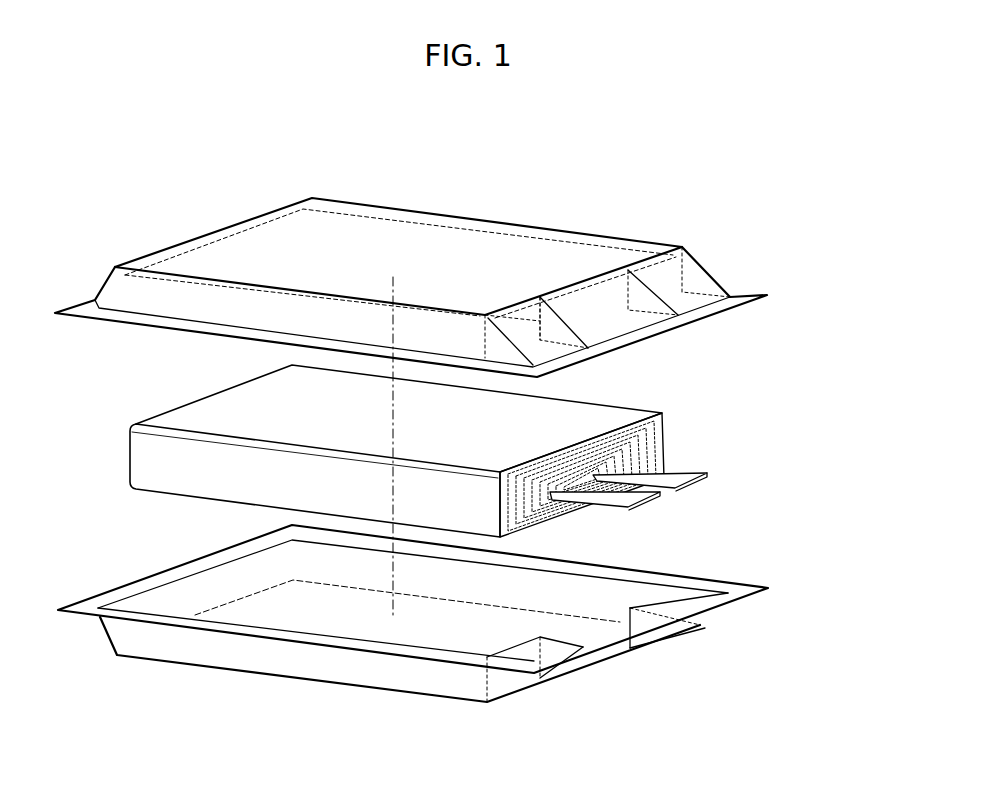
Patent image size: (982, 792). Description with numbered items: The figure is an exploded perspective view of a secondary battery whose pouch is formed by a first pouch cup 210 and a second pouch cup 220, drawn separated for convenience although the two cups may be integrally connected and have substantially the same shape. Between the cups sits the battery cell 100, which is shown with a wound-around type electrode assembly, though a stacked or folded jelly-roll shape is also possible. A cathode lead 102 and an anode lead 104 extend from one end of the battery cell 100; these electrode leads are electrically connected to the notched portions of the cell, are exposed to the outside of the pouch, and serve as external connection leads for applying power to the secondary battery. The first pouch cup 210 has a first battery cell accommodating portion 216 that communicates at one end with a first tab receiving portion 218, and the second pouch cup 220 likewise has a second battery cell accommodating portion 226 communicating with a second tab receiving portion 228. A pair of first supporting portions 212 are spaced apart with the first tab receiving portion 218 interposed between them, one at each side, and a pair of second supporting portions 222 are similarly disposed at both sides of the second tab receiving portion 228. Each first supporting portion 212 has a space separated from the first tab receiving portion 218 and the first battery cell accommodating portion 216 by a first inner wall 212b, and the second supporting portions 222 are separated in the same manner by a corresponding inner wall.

The battery cell 100 is at (444, 458).
The cathode lead 102 is at (631, 496).
The anode lead 104 is at (681, 478).
The first pouch cup 210 is at (462, 609).
The first supporting portion 212 is at (684, 600).
The first inner wall 212b is at (641, 619).
The first battery cell accommodating portion 216 is at (257, 610).
The first tab receiving portion 218 is at (593, 628).
The second pouch cup 220 is at (460, 263).
The second supporting portion 222 is at (683, 298).
The second battery cell accommodating portion 226 is at (413, 255).
The second tab receiving portion 228 is at (605, 323).